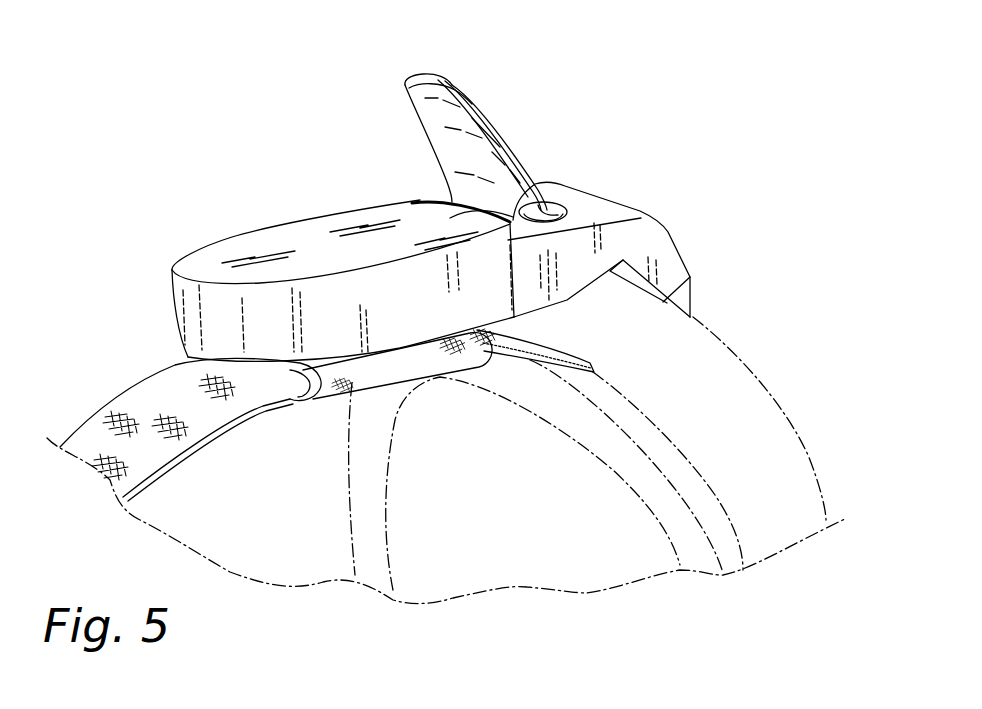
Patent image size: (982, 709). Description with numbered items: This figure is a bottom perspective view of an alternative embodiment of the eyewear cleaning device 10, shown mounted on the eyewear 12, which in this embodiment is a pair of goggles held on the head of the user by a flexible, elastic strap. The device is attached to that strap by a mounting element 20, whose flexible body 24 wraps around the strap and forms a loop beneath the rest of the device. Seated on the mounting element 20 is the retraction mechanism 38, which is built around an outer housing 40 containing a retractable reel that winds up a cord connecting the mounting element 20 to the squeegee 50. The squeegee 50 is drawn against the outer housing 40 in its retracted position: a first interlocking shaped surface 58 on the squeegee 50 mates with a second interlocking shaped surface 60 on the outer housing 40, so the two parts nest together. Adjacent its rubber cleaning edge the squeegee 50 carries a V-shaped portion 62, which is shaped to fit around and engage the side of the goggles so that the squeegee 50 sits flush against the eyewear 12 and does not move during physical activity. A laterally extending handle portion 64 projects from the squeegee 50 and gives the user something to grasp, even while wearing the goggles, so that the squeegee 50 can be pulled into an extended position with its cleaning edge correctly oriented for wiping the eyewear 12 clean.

The eyewear cleaning device 10 is at (554, 104).
The eyewear 12 is at (780, 436).
The mounting element 20 is at (327, 413).
The flexible body 24 is at (330, 392).
The retraction mechanism 38 is at (207, 217).
The outer housing 40 is at (301, 237).
The squeegee 50 is at (688, 298).
The first interlocking shaped surface 58 is at (519, 199).
The second interlocking shaped surface 60 is at (450, 218).
The V-shaped portion 62 is at (622, 268).
The laterally extending handle portion 64 is at (415, 96).